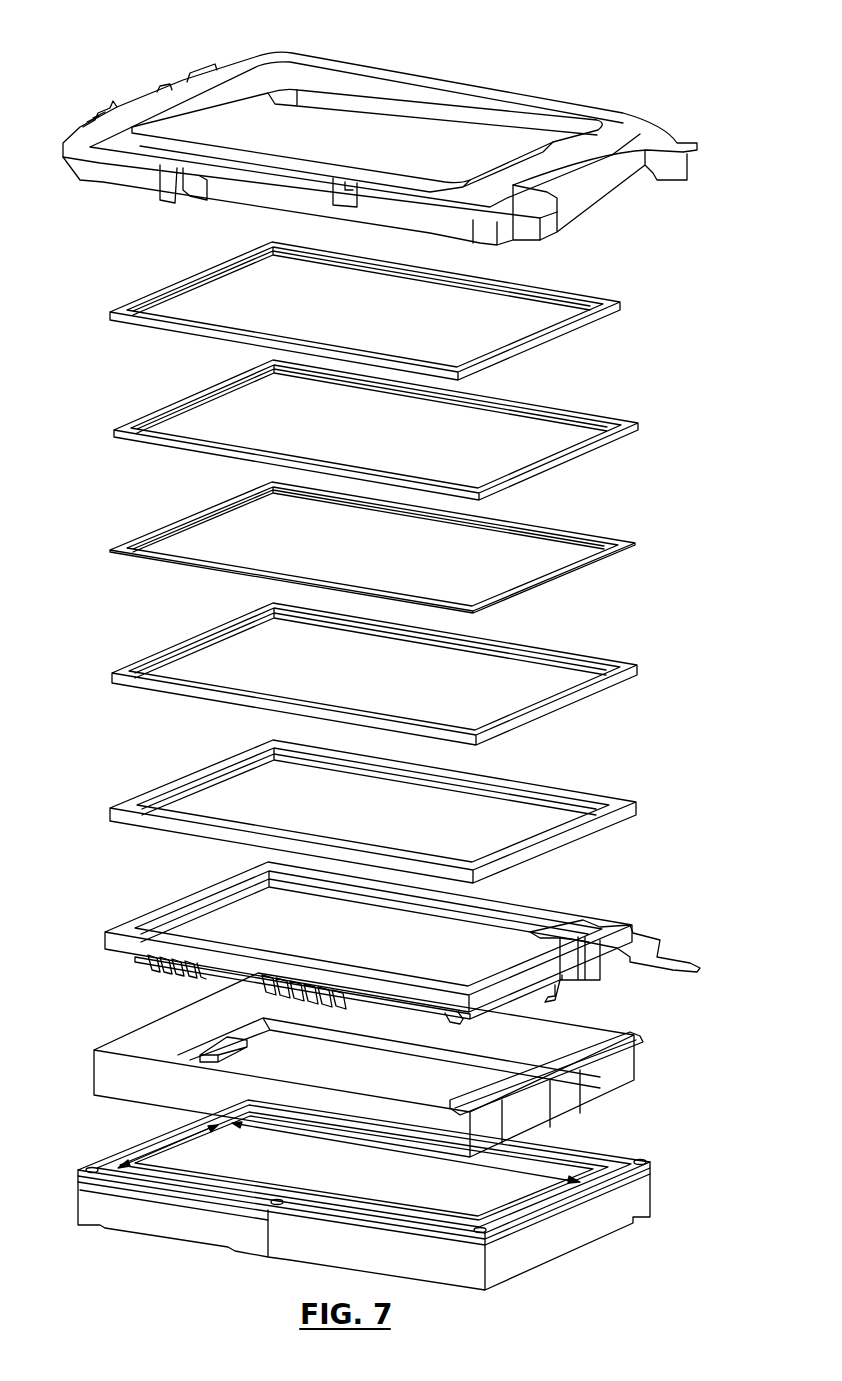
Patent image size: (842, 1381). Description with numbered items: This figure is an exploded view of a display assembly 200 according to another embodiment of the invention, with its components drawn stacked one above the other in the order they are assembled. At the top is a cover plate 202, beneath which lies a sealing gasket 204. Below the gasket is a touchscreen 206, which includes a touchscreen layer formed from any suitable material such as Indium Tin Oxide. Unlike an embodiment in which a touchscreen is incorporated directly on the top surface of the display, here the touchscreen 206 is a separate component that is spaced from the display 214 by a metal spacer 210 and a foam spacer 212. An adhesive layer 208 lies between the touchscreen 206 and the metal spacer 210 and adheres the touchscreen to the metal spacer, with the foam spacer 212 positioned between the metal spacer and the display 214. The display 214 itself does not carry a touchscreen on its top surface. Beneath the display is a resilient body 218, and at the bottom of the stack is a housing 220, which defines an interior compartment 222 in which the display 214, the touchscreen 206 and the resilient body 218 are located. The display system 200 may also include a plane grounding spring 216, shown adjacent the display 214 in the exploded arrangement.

The display assembly 200 is at (447, 62).
The cover plate 202 is at (628, 123).
The sealing gasket 204 is at (608, 302).
The touchscreen 206 is at (610, 424).
The adhesive layer 208 is at (607, 544).
The metal spacer 210 is at (606, 668).
The foam spacer 212 is at (608, 805).
The display 214 is at (605, 932).
The plane grounding spring 216 is at (160, 975).
The resilient body 218 is at (603, 1042).
The housing 220 is at (600, 1167).
The interior compartment 222 is at (158, 1153).